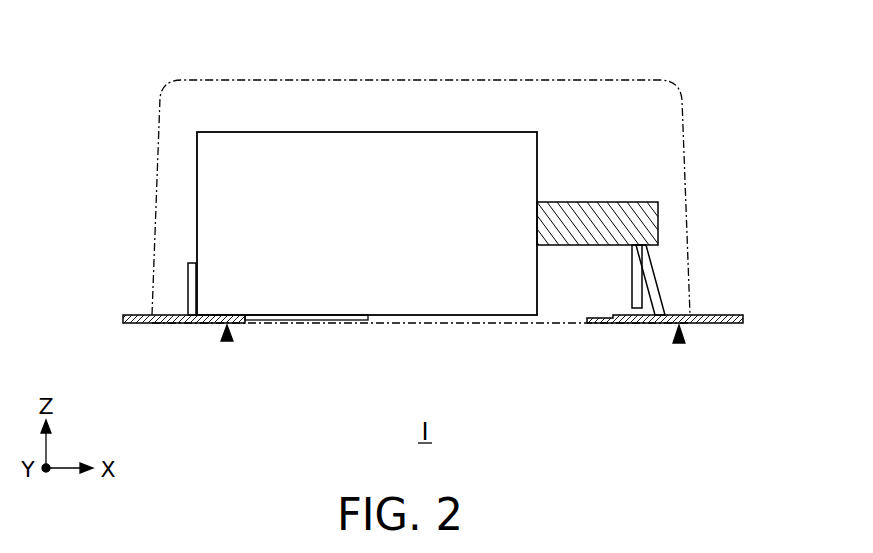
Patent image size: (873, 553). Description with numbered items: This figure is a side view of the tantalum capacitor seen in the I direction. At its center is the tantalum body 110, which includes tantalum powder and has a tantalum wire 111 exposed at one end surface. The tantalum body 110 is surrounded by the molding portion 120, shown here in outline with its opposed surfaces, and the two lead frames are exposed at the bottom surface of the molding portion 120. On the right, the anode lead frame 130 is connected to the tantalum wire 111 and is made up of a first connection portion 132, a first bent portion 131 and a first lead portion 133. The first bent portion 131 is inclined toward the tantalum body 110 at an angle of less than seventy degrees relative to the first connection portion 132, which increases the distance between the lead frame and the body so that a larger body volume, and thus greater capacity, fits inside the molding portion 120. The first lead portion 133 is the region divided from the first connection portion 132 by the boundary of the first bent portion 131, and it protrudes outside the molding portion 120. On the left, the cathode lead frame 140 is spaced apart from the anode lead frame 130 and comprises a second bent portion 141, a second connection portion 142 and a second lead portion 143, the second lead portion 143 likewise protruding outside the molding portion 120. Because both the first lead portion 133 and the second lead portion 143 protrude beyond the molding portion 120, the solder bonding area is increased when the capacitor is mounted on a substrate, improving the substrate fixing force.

The tantalum body 110 is at (302, 132).
The tantalum wire 111 is at (658, 216).
The molding portion 120 is at (422, 80).
The anode lead frame 130 is at (679, 343).
The first bent portion 131 is at (646, 278).
The first connection portion 132 is at (638, 323).
The first lead portion 133 is at (740, 323).
The cathode lead frame 140 is at (227, 341).
The second bent portion 141 is at (186, 294).
The second connection portion 142 is at (241, 323).
The second lead portion 143 is at (160, 323).